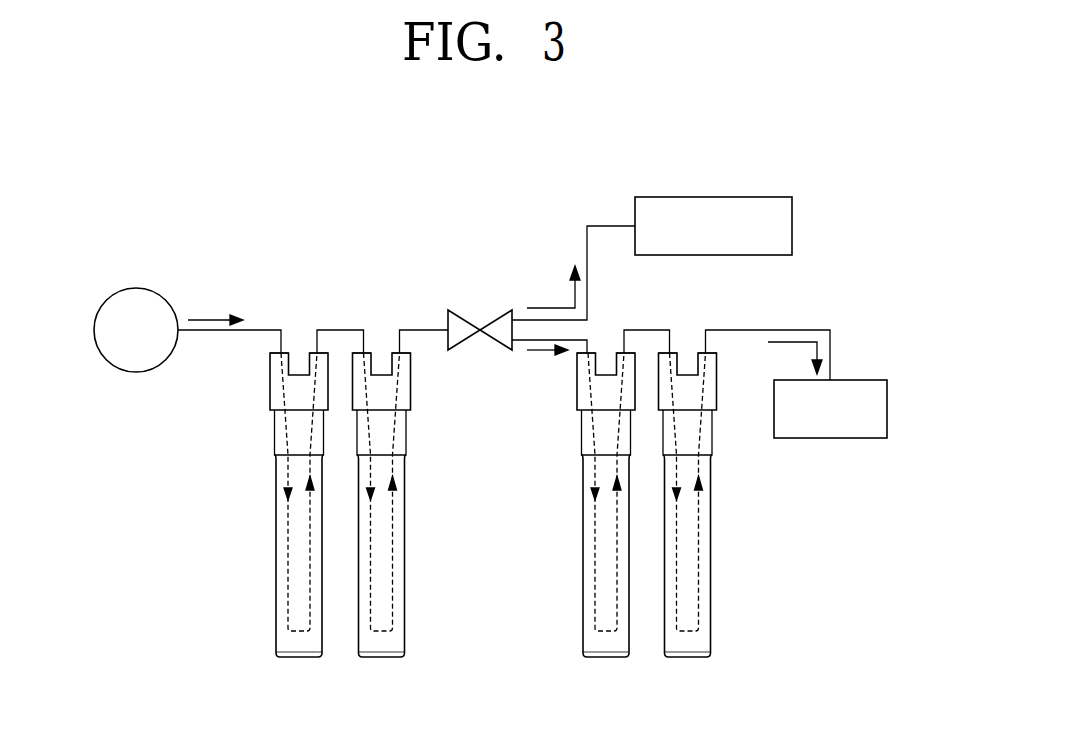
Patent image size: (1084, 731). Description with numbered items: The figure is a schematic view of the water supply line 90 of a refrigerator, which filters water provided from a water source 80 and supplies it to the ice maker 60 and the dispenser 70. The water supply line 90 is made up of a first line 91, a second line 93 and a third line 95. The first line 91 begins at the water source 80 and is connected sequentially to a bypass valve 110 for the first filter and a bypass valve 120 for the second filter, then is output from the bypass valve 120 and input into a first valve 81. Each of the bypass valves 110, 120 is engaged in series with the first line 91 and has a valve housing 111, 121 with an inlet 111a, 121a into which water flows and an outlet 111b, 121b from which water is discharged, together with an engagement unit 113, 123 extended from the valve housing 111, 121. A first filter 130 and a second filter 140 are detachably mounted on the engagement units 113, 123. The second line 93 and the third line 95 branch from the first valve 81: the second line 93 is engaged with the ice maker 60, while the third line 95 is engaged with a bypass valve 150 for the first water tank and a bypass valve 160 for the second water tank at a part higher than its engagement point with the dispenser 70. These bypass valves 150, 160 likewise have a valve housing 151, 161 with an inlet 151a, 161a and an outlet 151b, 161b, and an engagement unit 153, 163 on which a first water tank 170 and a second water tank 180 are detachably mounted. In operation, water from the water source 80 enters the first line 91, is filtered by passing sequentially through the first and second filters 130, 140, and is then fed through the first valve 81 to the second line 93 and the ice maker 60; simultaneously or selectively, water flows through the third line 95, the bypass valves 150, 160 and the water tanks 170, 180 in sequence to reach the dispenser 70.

The ice maker 60 is at (763, 197).
The dispenser 70 is at (863, 380).
The water source 80 is at (145, 288).
The first valve 81 is at (462, 320).
The water supply line 90 is at (553, 246).
The first line 91 is at (280, 330).
The second line 93 is at (518, 320).
The third line 95 is at (548, 340).
The bypass valve for the first filter 110 is at (264, 460).
The valve housing 111 is at (264, 349).
The inlet 111a is at (273, 366).
The outlet 111b is at (317, 353).
The engagement unit 113 is at (276, 446).
The bypass valve for the second filter 120 is at (418, 460).
The valve housing 121 is at (415, 349).
The inlet 121a is at (364, 353).
The outlet 121b is at (400, 353).
The engagement unit 123 is at (408, 450).
The first filter 130 is at (277, 615).
The second filter 140 is at (406, 615).
The bypass valve for the first water tank 150 is at (571, 460).
The valve housing 151 is at (571, 349).
The inlet 151a is at (578, 370).
The outlet 151b is at (624, 353).
The engagement unit 153 is at (583, 450).
The bypass valve for the second water tank 160 is at (724, 460).
The valve housing 161 is at (721, 349).
The inlet 161a is at (670, 353).
The outlet 161b is at (706, 353).
The engagement unit 163 is at (715, 455).
The first water tank 170 is at (583, 615).
The second water tank 180 is at (712, 615).